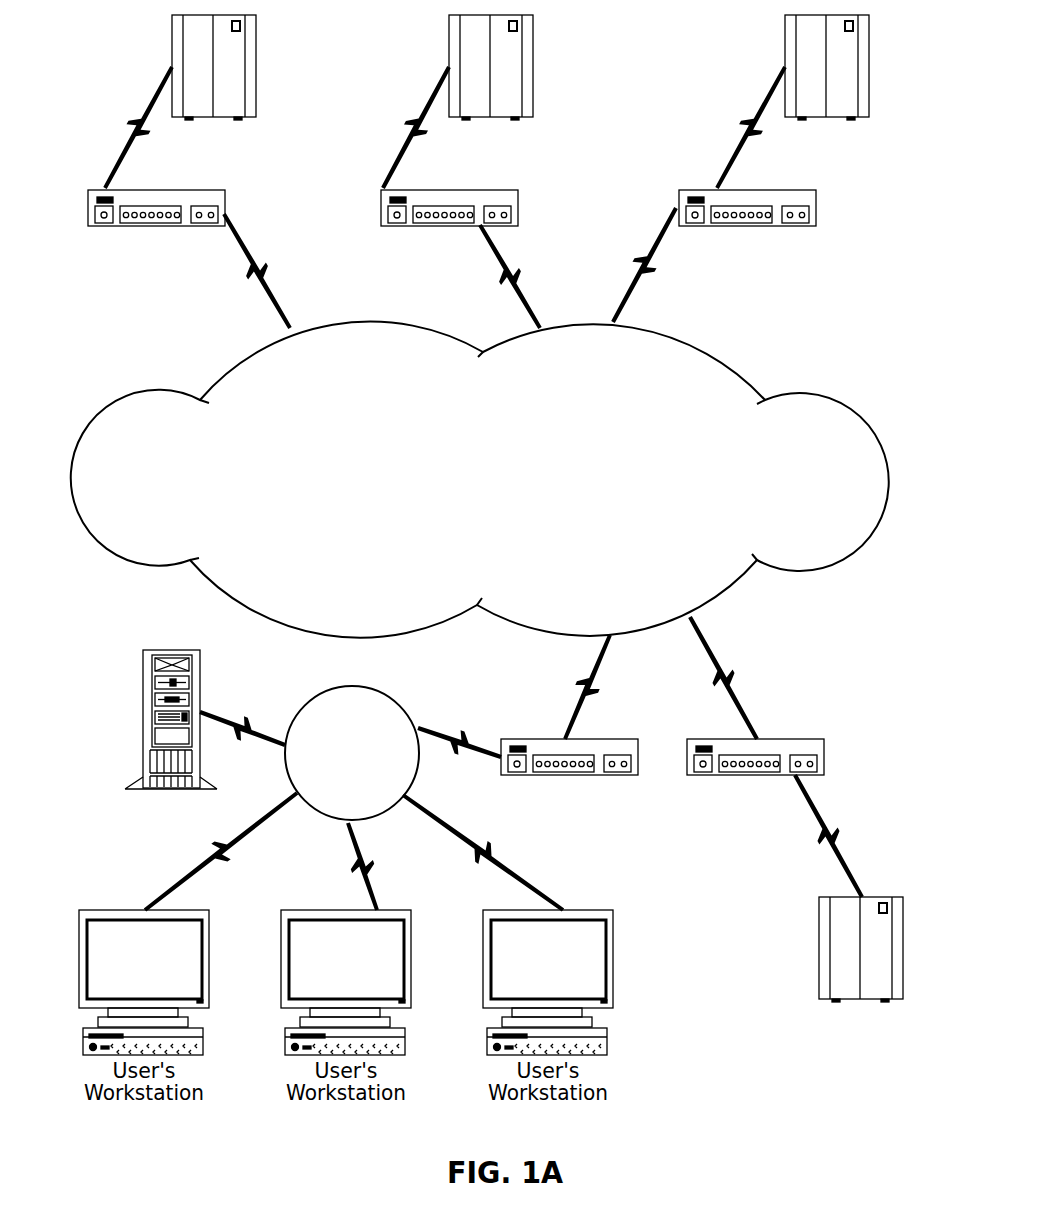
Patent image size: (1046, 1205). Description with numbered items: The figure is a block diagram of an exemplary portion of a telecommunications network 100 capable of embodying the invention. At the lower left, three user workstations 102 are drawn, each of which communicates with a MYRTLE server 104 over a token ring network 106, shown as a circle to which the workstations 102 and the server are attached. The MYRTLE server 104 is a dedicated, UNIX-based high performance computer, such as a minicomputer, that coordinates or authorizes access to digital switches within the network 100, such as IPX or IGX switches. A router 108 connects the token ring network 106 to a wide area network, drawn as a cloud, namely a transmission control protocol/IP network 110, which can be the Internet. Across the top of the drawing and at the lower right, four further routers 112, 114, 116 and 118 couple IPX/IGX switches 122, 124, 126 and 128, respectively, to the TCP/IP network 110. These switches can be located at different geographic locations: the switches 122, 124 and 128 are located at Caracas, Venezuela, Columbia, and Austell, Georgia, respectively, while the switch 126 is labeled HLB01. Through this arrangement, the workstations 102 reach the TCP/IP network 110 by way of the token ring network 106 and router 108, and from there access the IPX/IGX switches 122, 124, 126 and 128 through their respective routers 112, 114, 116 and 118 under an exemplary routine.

The telecommunications network 100 is at (704, 1075).
The user workstations 102 is at (194, 910).
The MYRTLE server 104 is at (203, 675).
The token ring network 106 is at (390, 694).
The router 108 is at (600, 739).
The TCP/IP network 110 is at (741, 368).
The router 112 is at (195, 190).
The router 114 is at (488, 190).
The router 116 is at (787, 190).
The router 118 is at (792, 739).
The IPX/IGX switch 122 is at (258, 34).
The IPX/IGX switch 124 is at (535, 34).
The IPX/IGX switch 126 is at (871, 34).
The IPX/IGX switch 128 is at (872, 896).